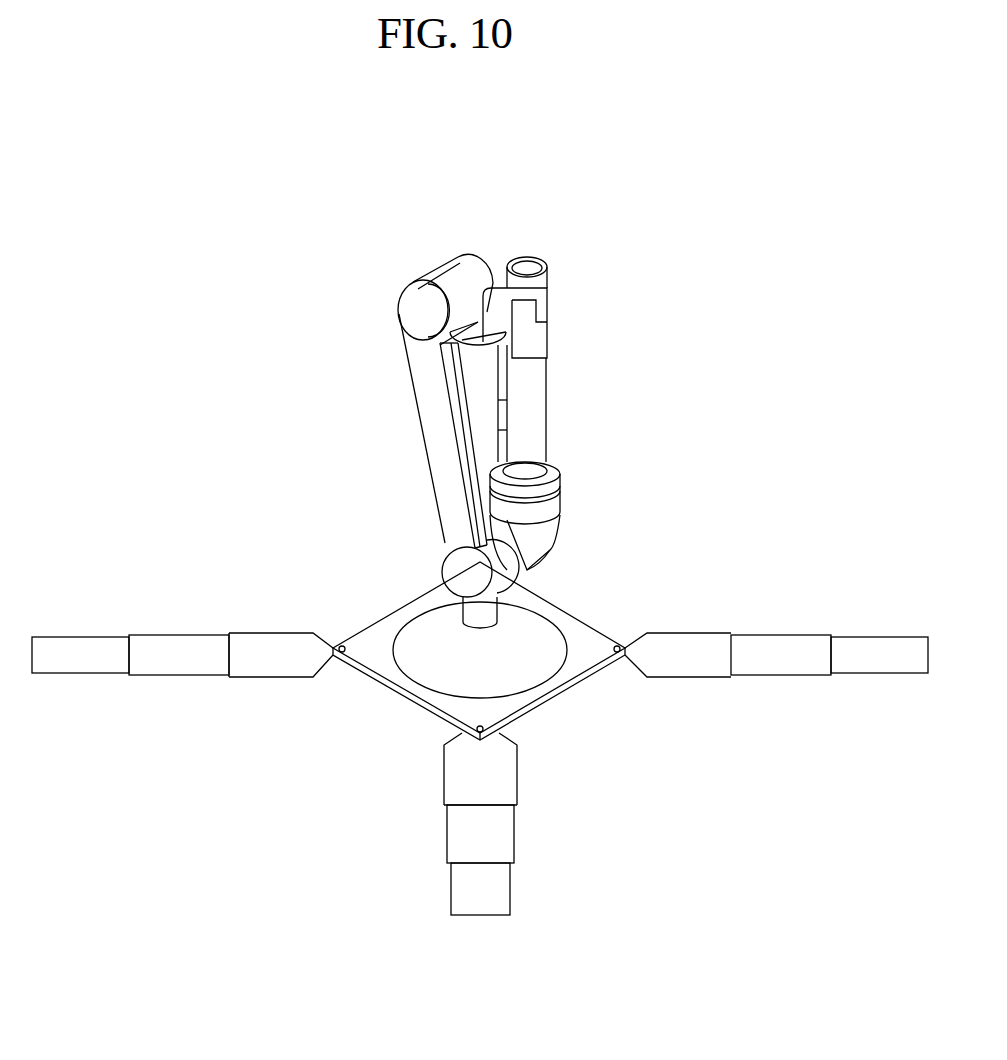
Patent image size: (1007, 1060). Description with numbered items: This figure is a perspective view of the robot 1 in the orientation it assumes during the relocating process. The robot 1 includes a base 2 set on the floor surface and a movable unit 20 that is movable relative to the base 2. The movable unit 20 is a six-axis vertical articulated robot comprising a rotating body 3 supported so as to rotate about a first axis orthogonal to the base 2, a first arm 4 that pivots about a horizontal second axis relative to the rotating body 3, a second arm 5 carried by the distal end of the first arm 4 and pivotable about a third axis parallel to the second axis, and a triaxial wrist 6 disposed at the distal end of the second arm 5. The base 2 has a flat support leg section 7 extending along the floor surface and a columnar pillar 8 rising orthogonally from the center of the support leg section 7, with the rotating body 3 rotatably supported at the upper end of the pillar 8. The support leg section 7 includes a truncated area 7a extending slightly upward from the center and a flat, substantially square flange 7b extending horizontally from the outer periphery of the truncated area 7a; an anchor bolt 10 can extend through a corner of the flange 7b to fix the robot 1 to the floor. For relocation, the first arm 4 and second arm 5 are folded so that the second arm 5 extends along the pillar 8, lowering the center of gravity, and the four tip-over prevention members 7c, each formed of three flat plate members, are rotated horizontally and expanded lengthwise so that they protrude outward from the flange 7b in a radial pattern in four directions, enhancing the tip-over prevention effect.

The robot 1 is at (262, 232).
The base 2 is at (391, 562).
The rotating body 3 is at (482, 347).
The first arm 4 is at (418, 436).
The second arm 5 is at (574, 519).
The triaxial wrist 6 is at (527, 244).
The support leg section 7 is at (376, 607).
The truncated area 7a is at (527, 623).
The flange 7b is at (590, 643).
The tip-over prevention members 7c is at (177, 643).
The pillar 8 is at (470, 612).
The anchor bolt 10 is at (342, 646).
The movable unit 20 is at (394, 272).